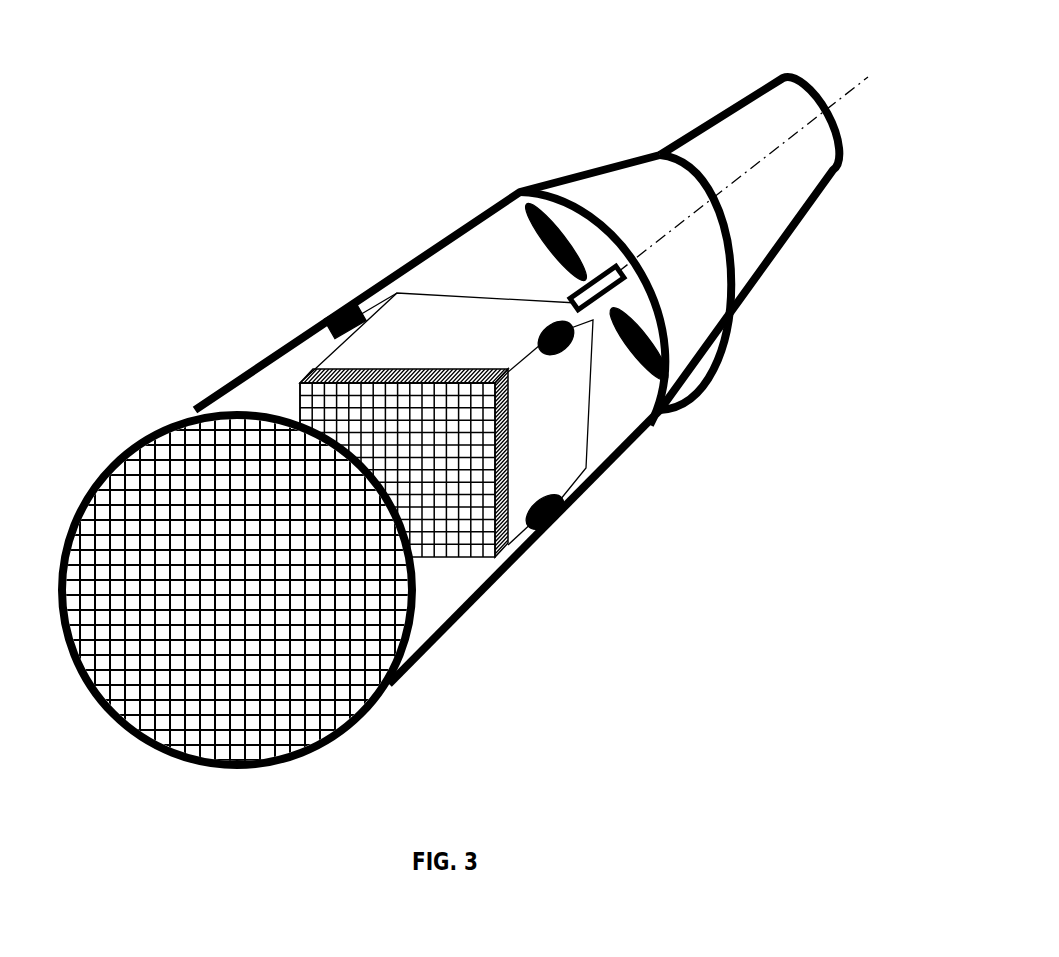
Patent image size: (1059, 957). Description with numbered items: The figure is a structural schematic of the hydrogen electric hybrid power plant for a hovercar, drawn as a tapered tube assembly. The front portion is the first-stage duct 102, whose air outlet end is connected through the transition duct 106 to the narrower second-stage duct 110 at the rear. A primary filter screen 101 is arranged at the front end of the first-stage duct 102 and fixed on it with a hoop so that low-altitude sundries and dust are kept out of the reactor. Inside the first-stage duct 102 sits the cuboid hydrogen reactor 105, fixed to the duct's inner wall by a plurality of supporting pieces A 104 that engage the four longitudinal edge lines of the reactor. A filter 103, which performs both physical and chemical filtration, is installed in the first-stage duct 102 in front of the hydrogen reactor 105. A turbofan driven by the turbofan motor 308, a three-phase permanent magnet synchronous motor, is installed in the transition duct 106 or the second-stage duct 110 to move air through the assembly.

The primary filter screen 101 is at (190, 500).
The first-stage duct 102 is at (237, 402).
The filter 103 is at (302, 372).
The supporting piece A 104 is at (340, 306).
The hydrogen reactor 105 is at (457, 307).
The transition duct 106 is at (640, 206).
The second-stage duct 110 is at (783, 127).
The turbofan motor 308 is at (623, 304).